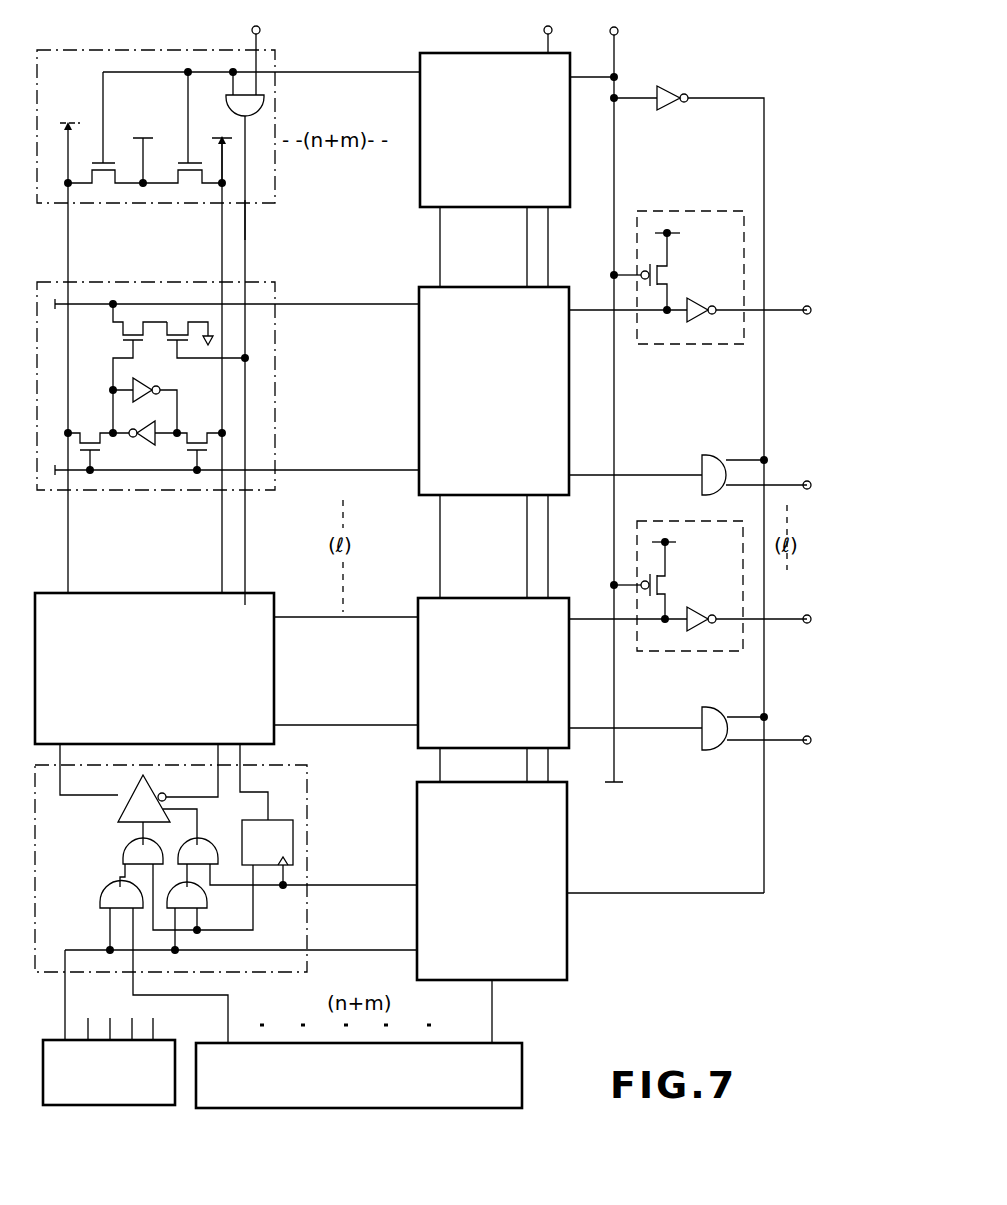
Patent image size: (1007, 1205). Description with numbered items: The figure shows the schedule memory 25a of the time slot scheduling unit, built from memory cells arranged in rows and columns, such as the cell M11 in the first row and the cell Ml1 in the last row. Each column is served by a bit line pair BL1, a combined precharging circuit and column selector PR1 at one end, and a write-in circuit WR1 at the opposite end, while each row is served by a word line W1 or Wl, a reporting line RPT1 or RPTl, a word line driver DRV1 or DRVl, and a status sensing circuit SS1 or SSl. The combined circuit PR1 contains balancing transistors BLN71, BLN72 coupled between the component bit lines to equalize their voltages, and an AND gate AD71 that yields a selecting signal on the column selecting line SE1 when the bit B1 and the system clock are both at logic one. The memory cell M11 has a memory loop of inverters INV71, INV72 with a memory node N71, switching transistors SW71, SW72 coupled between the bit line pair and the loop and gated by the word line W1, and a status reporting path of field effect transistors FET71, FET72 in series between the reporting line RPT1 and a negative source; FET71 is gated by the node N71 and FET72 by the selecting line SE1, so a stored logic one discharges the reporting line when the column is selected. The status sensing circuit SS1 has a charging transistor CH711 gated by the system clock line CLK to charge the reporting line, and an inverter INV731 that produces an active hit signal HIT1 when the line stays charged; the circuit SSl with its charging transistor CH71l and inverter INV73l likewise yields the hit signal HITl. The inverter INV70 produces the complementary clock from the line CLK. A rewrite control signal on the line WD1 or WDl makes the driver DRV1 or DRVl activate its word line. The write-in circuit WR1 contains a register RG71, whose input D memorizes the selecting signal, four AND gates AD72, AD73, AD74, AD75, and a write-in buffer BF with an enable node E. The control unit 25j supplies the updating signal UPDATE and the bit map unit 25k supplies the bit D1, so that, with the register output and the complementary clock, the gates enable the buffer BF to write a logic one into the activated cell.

The combined circuit of precharging circuit and column selector PR1 is at (228, 308).
The bit B1 is at (260, 32).
The balancing transistor BLN71 is at (100, 157).
The balancing transistor BLN72 is at (184, 157).
The AND gate AD71 is at (265, 107).
The bit line pair BL1 is at (70, 220).
The column selecting line SE1 is at (268, 220).
The memory cell M11 is at (228, 377).
The reporting line RPT1 is at (330, 292).
The field effect transistor FET71 is at (127, 327).
The field effect transistor FET72 is at (178, 332).
The memory node N71 is at (112, 387).
The inverter circuit INV72 is at (139, 381).
The inverter circuit INV71 is at (130, 444).
The switching transistor SW71 is at (86, 472).
The switching transistor SW72 is at (203, 434).
The word line W1 is at (394, 470).
The system clock signal line CLK is at (618, 33).
The schedule memory 25a is at (717, 32).
The inverter circuit INV70 is at (676, 94).
The status sensing circuit SS1 is at (662, 279).
The charging transistor CH711 is at (690, 268).
The inverter circuit INV731 is at (706, 324).
The hit signal HIT1 is at (806, 306).
The word line driver circuit DRV1 is at (703, 458).
The rewrite control signal line WD1 is at (807, 482).
The status sensing circuit SSl is at (656, 584).
The charging transistor CH71l is at (690, 574).
The inverter circuit INV73l is at (706, 632).
The hit signal HITl is at (806, 617).
The word line driver circuit DRVl is at (703, 710).
The rewrite control signal line WDl is at (806, 739).
The memory cell Ml1 is at (153, 592).
The reporting line RPTl is at (308, 618).
The word line Wl is at (328, 724).
The write-in circuit WR1 is at (226, 818).
The write-in buffer circuit BF is at (118, 809).
The enable node E is at (190, 823).
The AND gate AD73 is at (125, 846).
The AND gate AD74 is at (203, 868).
The AND gate AD72 is at (103, 890).
The AND gate AD75 is at (208, 908).
The register RG71 is at (293, 830).
The data input of register D is at (268, 815).
The updating signal UPDATE is at (327, 978).
The bit map signal D1 is at (230, 1010).
The control unit 25j is at (55, 1038).
The bit map unit 25k is at (544, 1075).